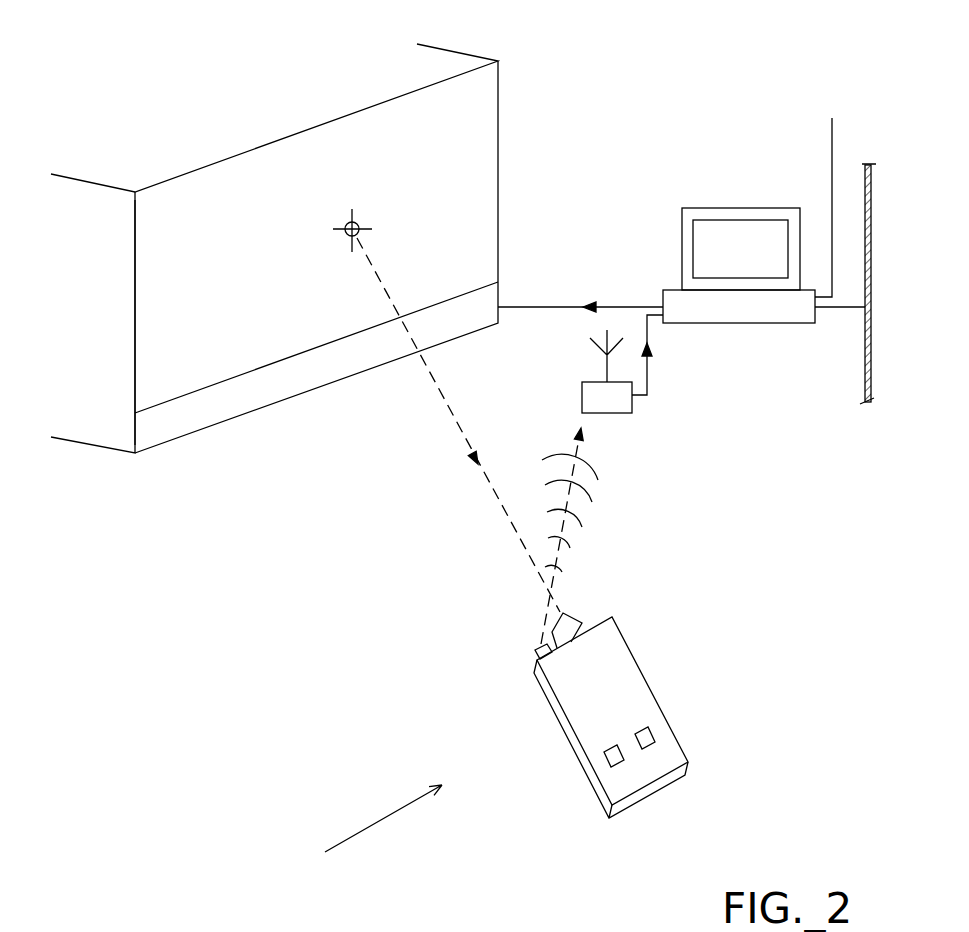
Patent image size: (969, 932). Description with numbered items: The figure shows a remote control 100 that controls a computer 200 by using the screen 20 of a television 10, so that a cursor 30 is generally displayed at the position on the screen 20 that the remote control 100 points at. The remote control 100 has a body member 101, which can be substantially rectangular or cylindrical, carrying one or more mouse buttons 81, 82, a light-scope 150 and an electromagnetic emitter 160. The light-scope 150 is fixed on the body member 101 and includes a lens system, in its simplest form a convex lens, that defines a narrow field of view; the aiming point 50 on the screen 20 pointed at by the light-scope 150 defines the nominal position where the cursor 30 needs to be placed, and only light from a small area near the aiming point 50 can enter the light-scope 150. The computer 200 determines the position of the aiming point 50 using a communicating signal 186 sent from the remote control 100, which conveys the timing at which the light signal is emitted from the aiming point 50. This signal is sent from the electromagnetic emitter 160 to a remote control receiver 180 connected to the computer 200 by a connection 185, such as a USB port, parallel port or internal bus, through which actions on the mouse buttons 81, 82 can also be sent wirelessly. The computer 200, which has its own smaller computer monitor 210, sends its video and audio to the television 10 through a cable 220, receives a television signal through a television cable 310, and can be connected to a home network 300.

The television 10 is at (470, 50).
The screen 20 is at (145, 208).
The cursor 30 is at (337, 235).
The aiming point 50 is at (360, 222).
The mouse button 81 is at (613, 760).
The mouse button 82 is at (650, 738).
The remote control 100 is at (362, 828).
The body member 101 is at (563, 732).
The light-scope 150 is at (575, 618).
The electromagnetic emitter 160 is at (535, 650).
The remote control receiver 180 is at (582, 397).
The receiver cable 185 is at (648, 378).
The communicating signal 186 is at (572, 478).
The computer 200 is at (663, 297).
The computer monitor 210 is at (683, 208).
The cable 220 is at (548, 307).
The home network 300 is at (865, 362).
The television cable 310 is at (832, 225).